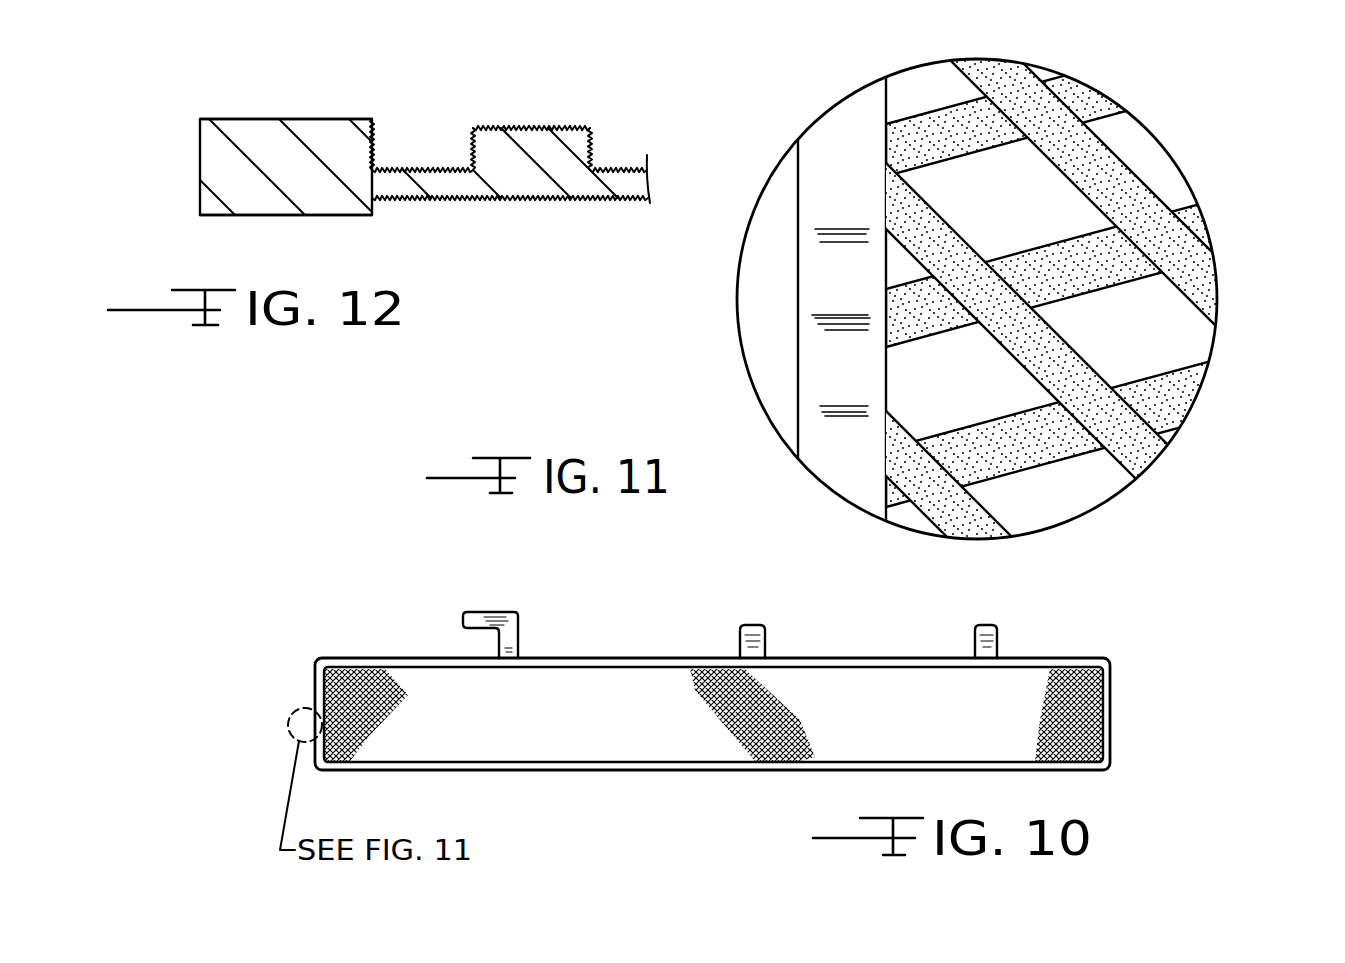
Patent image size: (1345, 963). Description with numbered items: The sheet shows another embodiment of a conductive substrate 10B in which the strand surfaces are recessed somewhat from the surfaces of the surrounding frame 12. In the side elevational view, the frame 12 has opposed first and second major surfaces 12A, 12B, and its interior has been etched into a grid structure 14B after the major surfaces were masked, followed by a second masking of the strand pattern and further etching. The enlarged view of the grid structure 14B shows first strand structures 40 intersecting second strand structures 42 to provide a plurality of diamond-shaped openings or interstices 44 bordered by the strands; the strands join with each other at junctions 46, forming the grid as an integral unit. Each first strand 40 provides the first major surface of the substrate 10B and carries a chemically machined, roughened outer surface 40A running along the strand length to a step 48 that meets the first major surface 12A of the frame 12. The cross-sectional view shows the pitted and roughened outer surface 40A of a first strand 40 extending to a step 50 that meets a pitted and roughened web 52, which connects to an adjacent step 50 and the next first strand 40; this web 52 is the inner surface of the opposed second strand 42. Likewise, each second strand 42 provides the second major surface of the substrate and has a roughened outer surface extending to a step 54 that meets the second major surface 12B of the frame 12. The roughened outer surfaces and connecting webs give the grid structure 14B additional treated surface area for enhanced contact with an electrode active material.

In FIG. 10, the conductive substrate 10B is at (1155, 695).
In FIG. 12, the frame 12 is at (217, 170).
In FIG. 11, the frame 12 is at (817, 337).
In FIG. 10, the frame 12 is at (1063, 660).
In FIG. 12, the first major surface of the frame 12A is at (276, 108).
In FIG. 11, the first major surface of the frame 12A is at (857, 120).
In FIG. 12, the second major surface of the frame 12B is at (252, 222).
In FIG. 11, the grid structure 14B is at (1250, 263).
In FIG. 11, the first strand structures 40 is at (1043, 108).
In FIG. 12, the roughened outer surface of first strand 40A is at (496, 118).
In FIG. 11, the roughened outer surface of first strand 40A is at (938, 235).
In FIG. 11, the second strand structures 42 is at (1197, 208).
In FIG. 11, the diamond-shaped openings or interstices 44 is at (1136, 153).
In FIG. 12, the junctions 46 is at (527, 167).
In FIG. 11, the step 48 is at (890, 207).
In FIG. 12, the step 50 is at (376, 170).
In FIG. 12, the web 52 is at (617, 168).
In FIG. 11, the web 52 is at (1088, 270).
In FIG. 12, the step 54 is at (377, 200).